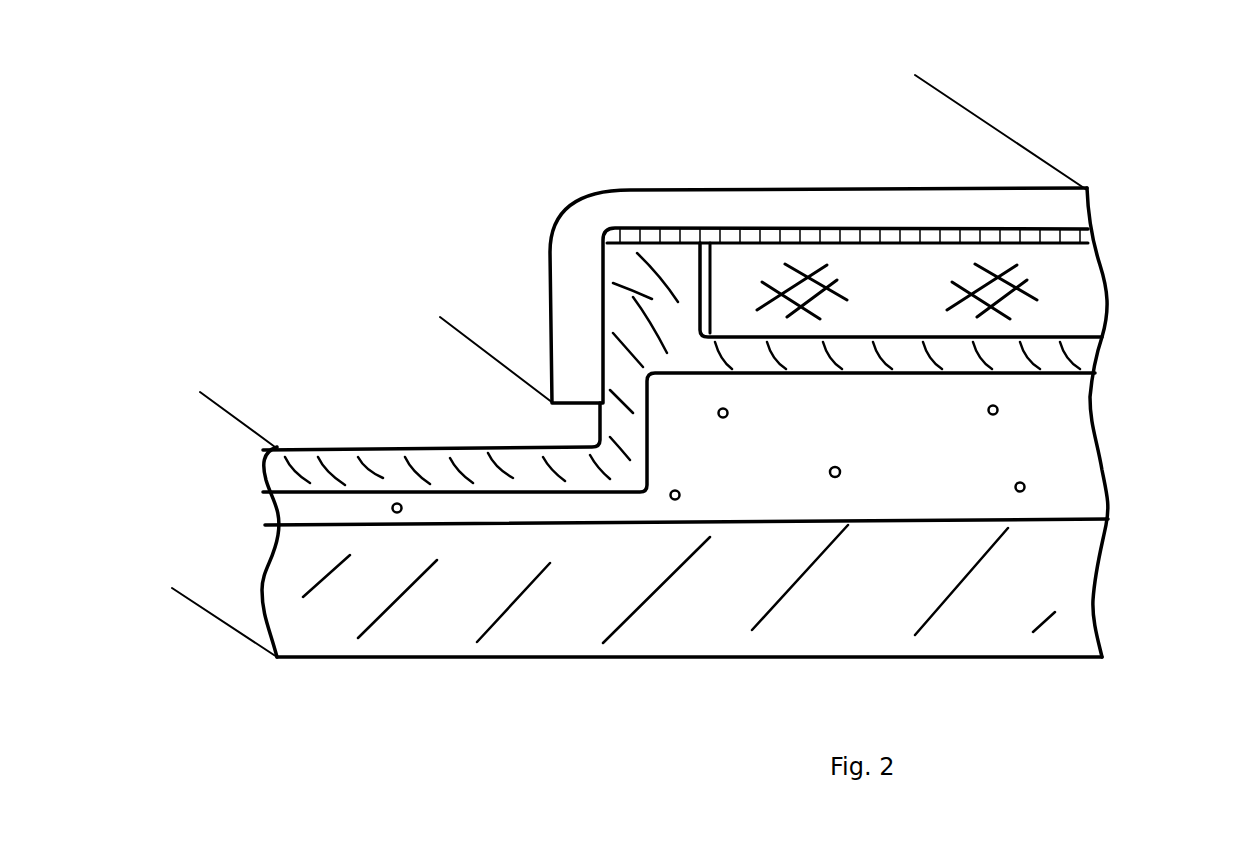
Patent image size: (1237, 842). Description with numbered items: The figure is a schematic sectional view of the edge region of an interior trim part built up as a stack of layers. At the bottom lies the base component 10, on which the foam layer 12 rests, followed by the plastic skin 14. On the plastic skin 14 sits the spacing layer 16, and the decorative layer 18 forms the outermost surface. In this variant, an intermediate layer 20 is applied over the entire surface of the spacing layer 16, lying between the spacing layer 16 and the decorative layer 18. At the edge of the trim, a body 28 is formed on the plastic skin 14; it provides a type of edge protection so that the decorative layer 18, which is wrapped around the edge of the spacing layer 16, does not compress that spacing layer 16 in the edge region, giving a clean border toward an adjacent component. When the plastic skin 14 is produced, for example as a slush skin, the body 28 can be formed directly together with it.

The base component 10 is at (1062, 547).
The foam layer 12 is at (1055, 430).
The plastic skin 14 is at (1080, 352).
The spacing layer 16 is at (1072, 302).
The decorative layer 18 is at (1053, 212).
The intermediate layer 20 is at (715, 228).
The body 28 is at (615, 278).